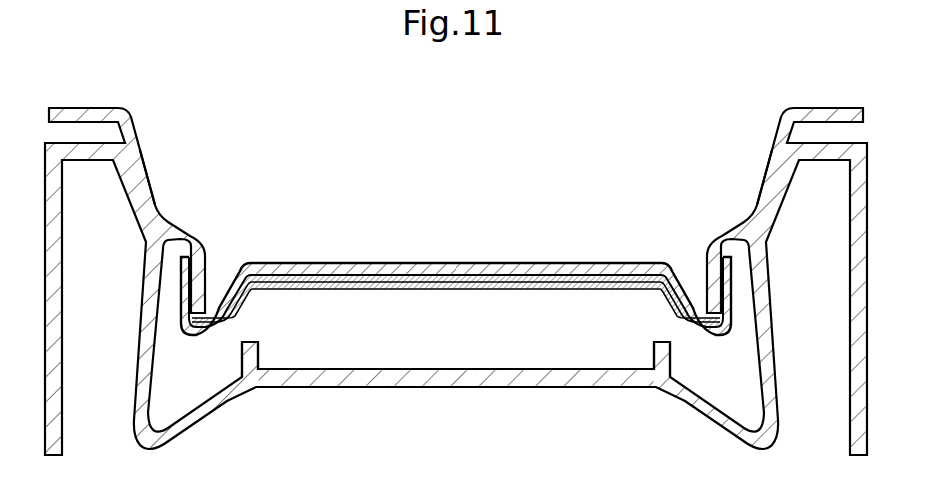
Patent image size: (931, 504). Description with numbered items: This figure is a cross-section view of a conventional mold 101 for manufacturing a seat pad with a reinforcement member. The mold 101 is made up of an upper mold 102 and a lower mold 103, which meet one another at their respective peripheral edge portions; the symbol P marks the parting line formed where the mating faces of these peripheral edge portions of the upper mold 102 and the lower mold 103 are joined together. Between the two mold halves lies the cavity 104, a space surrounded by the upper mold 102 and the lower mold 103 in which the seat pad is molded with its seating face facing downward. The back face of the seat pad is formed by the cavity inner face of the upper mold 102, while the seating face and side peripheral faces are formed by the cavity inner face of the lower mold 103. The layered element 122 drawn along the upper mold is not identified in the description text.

The mold 101 is at (456, 258).
The upper mold 102 is at (552, 262).
The inner layer 122 is at (407, 288).
The lower mold 103 is at (543, 388).
The cavity 104 is at (454, 349).
The parting line P is at (146, 188).